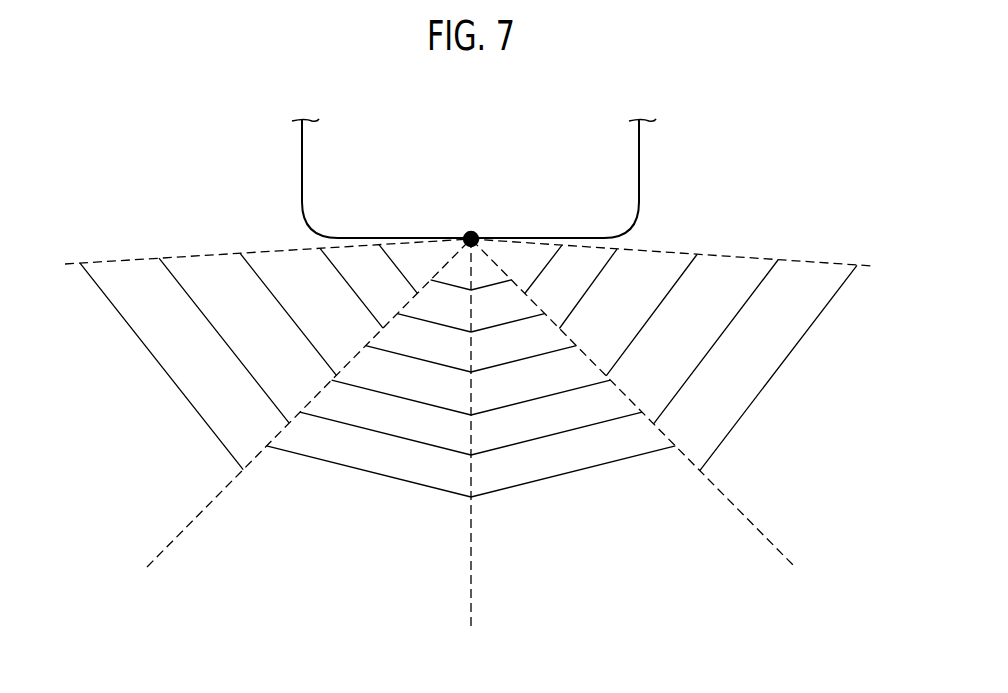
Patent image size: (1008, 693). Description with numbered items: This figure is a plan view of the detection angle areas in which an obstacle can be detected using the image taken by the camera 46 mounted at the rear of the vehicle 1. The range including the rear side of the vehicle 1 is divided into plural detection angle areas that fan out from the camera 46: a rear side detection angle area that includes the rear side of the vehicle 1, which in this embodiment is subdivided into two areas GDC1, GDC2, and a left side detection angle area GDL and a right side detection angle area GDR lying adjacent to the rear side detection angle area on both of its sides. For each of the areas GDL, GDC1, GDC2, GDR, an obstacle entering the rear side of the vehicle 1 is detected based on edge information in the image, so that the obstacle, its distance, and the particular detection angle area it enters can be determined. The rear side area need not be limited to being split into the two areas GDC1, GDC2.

The vehicle 1 is at (639, 166).
The camera 46 is at (470, 230).
The left side detection angle area GDL is at (163, 392).
The right side detection angle area GDR is at (785, 372).
The rear side detection angle area GDC1 is at (348, 485).
The rear side detection angle area GDC2 is at (577, 485).